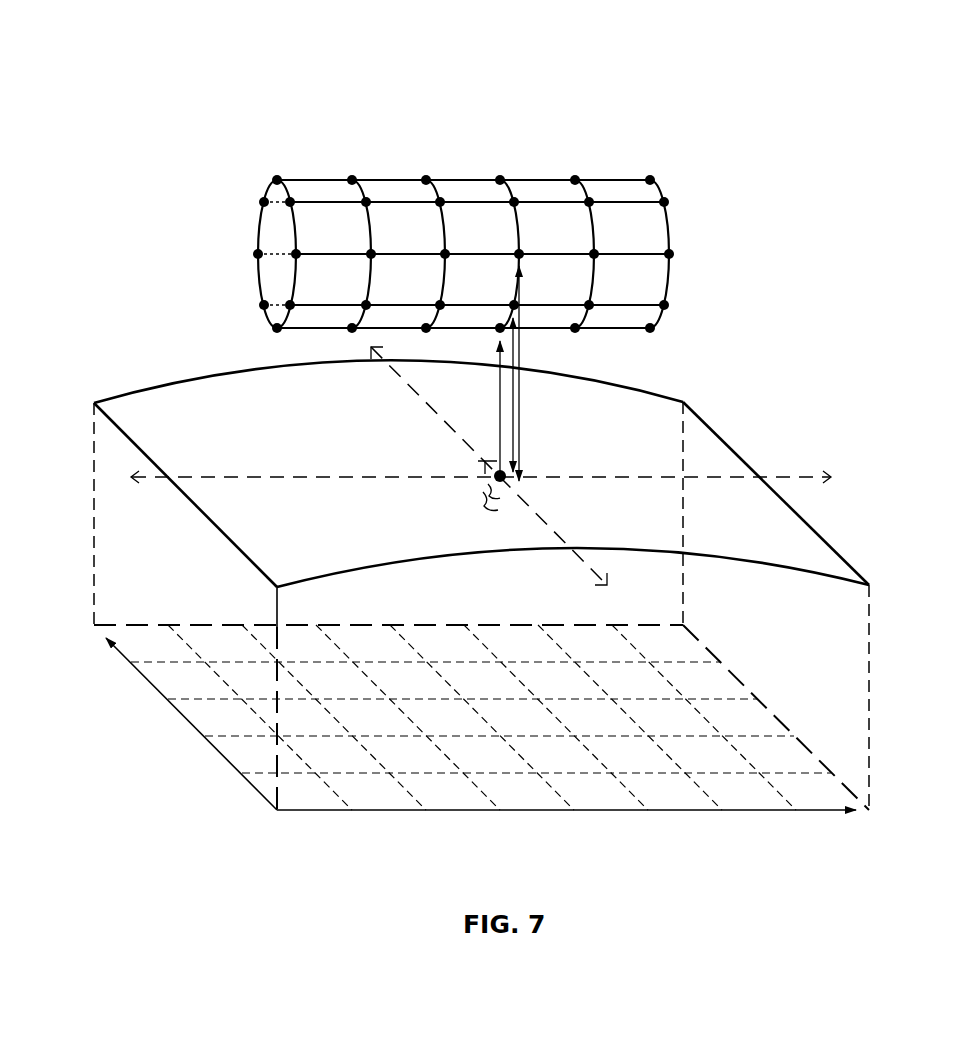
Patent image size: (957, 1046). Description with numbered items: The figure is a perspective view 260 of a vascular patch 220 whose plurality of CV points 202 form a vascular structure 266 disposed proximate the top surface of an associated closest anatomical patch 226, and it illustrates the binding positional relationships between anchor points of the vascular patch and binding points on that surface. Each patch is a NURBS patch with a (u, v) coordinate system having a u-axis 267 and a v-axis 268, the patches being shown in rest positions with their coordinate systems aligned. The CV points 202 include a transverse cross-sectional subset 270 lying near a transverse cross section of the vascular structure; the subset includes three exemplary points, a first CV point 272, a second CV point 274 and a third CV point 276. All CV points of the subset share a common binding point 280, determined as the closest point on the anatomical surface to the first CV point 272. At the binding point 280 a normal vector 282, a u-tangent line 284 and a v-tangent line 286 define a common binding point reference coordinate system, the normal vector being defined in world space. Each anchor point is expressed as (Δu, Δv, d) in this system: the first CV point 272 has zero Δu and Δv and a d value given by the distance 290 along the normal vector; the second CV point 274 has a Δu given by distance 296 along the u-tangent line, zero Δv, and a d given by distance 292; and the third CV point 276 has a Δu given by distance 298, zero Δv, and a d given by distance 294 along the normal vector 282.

The perspective view 260 is at (874, 99).
The vascular patch 220 is at (688, 175).
The closest anatomical patch 226 is at (306, 188).
The CV points 202 is at (427, 178).
The transverse cross-sectional subset 270 is at (529, 165).
The first CV point 272 is at (497, 333).
The second CV point 274 is at (511, 303).
The third CV point 276 is at (521, 250).
The binding point 280 is at (493, 480).
The normal vector 282 is at (497, 388).
The distance 290 is at (497, 412).
The distance 292 is at (515, 438).
The distance 294 is at (519, 399).
The distance 296 is at (485, 506).
The distance 298 is at (488, 506).
The u-tangent line 284 is at (233, 477).
The v-tangent line 286 is at (570, 547).
The vascular structure 266 is at (800, 544).
The u-axis 267 is at (740, 512).
The v-axis 268 is at (740, 812).